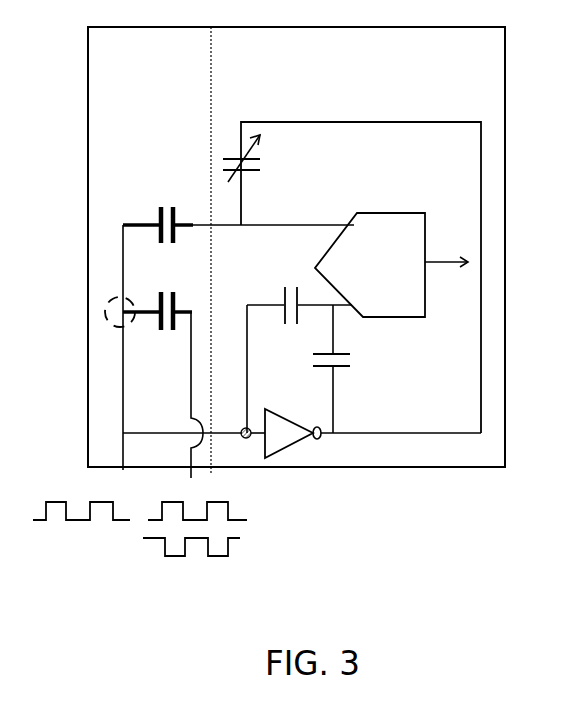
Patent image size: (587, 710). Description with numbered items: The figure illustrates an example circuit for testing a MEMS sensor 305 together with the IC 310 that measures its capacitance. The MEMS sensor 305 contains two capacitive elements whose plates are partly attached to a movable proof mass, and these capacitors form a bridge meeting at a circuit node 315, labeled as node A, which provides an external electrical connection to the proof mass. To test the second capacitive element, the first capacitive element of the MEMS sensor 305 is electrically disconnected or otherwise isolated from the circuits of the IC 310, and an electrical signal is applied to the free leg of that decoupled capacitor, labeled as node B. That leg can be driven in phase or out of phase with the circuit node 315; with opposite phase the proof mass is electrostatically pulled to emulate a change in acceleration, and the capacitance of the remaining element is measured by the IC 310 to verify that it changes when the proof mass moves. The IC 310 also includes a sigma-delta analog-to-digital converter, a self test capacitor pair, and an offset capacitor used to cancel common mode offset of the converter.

The MEMS sensor 305 is at (88, 85).
The IC 310 is at (505, 98).
The circuit node 315 is at (104, 315).